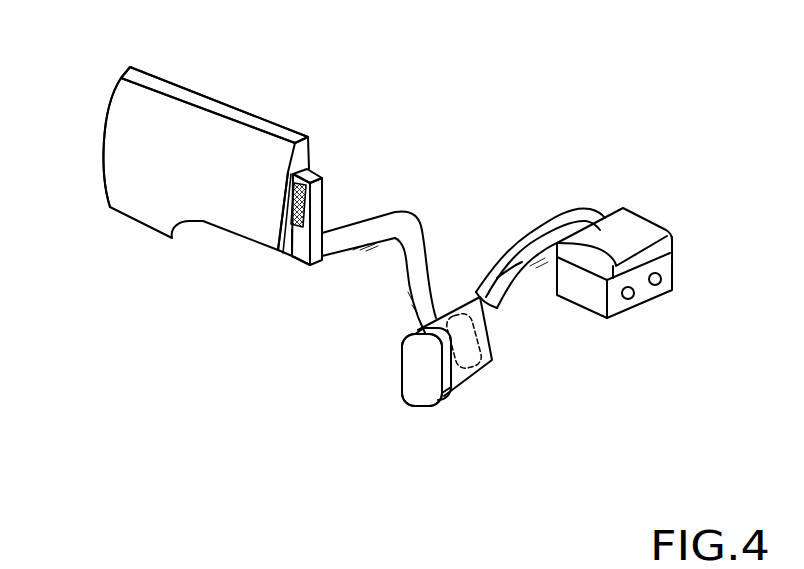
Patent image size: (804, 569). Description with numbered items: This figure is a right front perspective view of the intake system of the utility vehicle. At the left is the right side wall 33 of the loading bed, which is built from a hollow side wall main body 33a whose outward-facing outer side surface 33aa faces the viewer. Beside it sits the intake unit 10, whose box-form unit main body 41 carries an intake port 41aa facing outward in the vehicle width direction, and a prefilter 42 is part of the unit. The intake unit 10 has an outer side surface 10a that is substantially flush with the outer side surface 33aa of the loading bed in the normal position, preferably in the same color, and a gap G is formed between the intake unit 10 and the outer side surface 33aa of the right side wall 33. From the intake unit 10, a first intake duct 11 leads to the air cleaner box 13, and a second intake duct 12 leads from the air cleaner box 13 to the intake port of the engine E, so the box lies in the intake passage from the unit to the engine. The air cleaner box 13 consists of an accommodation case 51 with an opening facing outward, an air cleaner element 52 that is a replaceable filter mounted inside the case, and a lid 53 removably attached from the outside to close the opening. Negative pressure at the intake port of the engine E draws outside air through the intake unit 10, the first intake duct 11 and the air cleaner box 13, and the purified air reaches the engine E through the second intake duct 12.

The right side wall 33 is at (116, 133).
The side wall main body 33a is at (118, 180).
The outer side surface 33aa is at (210, 167).
The gap G is at (283, 186).
The intake unit 10 is at (330, 170).
The outer side surface 10a is at (295, 237).
The unit main body 41 is at (320, 212).
The intake port 41aa is at (289, 192).
The prefilter 42 is at (286, 252).
The first intake duct 11 is at (415, 240).
The second intake duct 12 is at (507, 257).
The air cleaner box 13 is at (402, 378).
The accommodation case 51 is at (494, 356).
The air cleaner element 52 is at (490, 366).
The lid 53 is at (427, 395).
The engine E is at (673, 268).